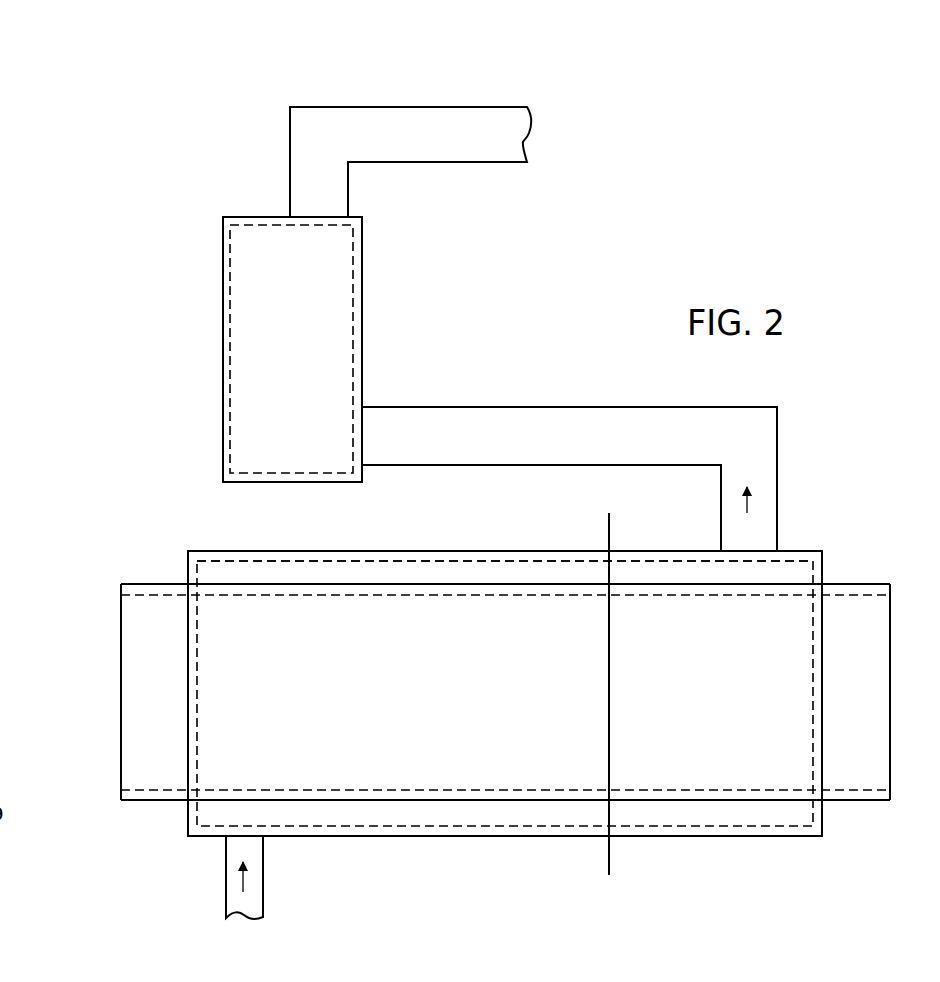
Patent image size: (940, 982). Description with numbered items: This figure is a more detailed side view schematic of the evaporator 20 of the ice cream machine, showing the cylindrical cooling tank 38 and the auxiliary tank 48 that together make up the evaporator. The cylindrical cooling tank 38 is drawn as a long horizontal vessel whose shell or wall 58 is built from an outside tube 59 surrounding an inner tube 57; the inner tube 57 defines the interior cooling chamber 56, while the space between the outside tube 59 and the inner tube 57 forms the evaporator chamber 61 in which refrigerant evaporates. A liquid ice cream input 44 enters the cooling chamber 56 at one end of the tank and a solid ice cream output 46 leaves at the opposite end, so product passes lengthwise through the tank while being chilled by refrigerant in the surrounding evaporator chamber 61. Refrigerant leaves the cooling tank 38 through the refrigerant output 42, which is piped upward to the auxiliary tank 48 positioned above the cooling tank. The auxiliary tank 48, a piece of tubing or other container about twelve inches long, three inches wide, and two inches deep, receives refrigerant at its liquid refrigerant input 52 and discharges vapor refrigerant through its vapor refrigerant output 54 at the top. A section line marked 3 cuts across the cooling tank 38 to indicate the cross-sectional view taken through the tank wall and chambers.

The evaporator 20 is at (216, 111).
The vapor refrigerant output 54 is at (523, 142).
The auxiliary tank 48 is at (362, 318).
The liquid refrigerant input 52 is at (363, 407).
The refrigerant output 42 is at (777, 548).
The cylindrical cooling tank 38 is at (852, 529).
The liquid ice cream input 44 is at (121, 621).
The solid ice cream output 46 is at (890, 768).
The cooling chamber 56 is at (98, 655).
The inner tube 57 is at (139, 584).
The outside tube 59 is at (205, 551).
The evaporator chamber 61 is at (320, 573).
The wall 58 is at (443, 551).
The section line 3- 3 is at (609, 513).